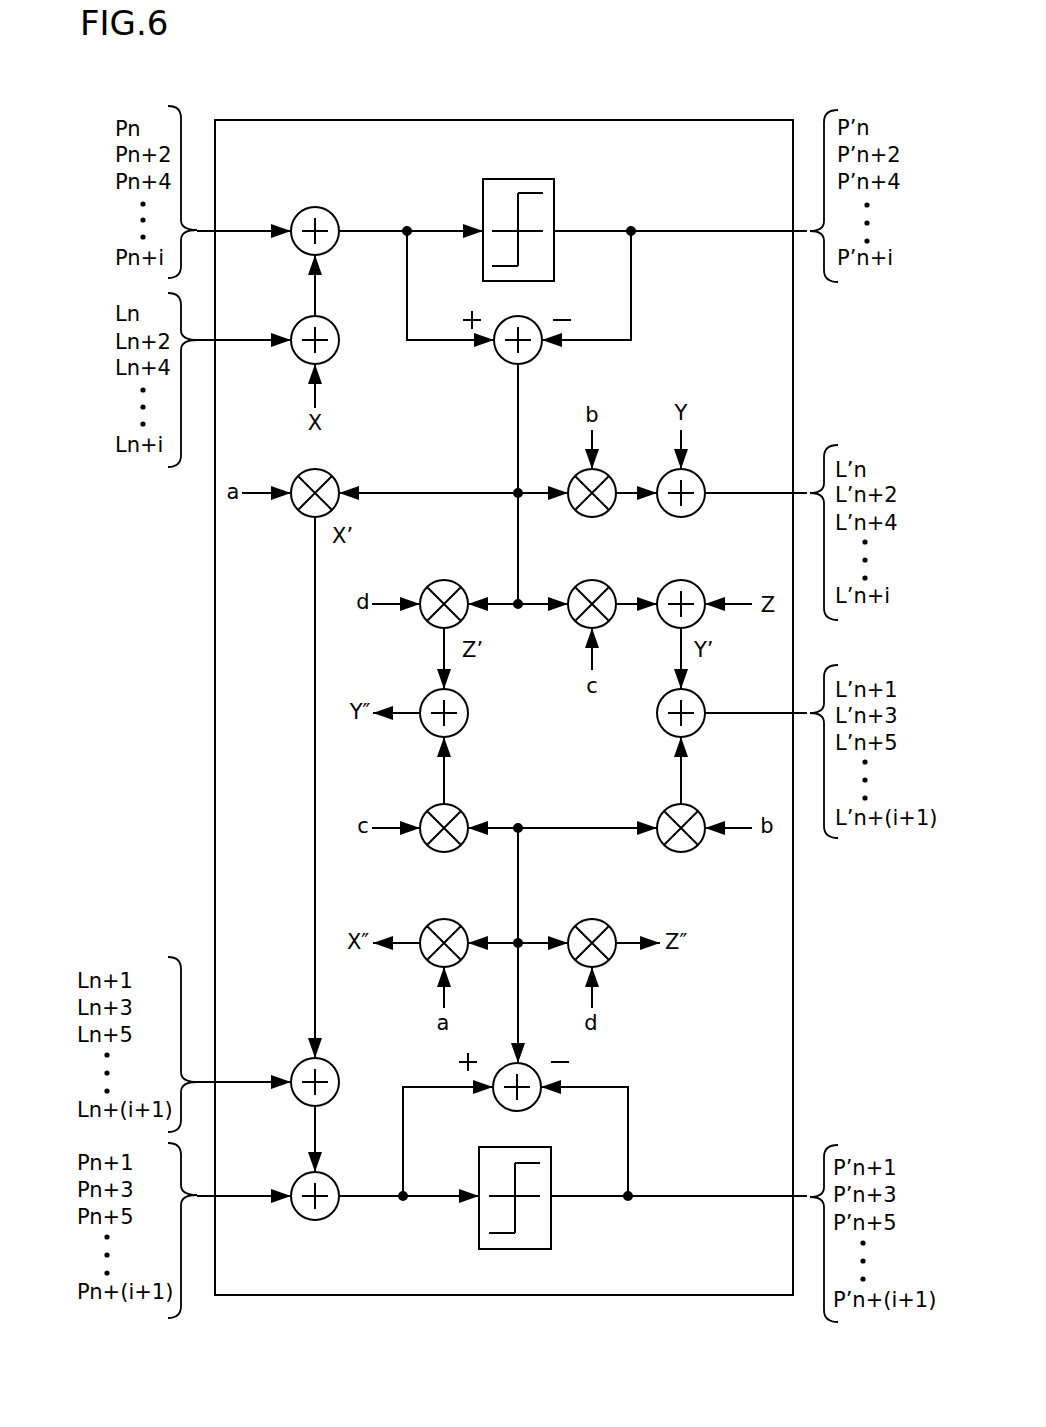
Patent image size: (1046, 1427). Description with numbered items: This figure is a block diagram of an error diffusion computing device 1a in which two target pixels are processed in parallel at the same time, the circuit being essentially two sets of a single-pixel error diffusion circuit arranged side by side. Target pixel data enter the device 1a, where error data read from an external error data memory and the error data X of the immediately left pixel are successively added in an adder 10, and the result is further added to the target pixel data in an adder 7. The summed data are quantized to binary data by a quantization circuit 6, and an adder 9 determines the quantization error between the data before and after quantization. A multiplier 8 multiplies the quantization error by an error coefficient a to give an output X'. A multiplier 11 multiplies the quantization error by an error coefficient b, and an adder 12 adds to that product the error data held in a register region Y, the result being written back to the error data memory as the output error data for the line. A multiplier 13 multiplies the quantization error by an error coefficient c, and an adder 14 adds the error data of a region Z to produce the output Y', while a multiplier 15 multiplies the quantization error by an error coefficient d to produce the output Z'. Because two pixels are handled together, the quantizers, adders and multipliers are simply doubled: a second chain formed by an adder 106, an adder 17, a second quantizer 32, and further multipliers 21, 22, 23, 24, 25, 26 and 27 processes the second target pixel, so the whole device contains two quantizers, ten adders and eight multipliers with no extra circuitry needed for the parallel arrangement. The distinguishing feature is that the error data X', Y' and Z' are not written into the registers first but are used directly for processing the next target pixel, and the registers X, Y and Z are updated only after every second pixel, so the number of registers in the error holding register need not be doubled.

The error diffusion computing device 1a is at (670, 121).
The adder 7 is at (338, 211).
The adder 10 is at (334, 322).
The quantization circuit 6 is at (554, 215).
The adder 9 is at (537, 360).
The multiplier 8 is at (334, 470).
The multiplier 21 is at (610, 475).
The multiplier 11 is at (700, 475).
The multiplier 22 is at (610, 586).
The adder 12 is at (700, 586).
The multiplier 23 is at (462, 586).
The multiplier 13 is at (461, 695).
The adder 14 is at (698, 695).
The multiplier 25 is at (461, 811).
The multiplier 24 is at (698, 811).
The multiplier 27 is at (459, 925).
The multiplier 26 is at (607, 925).
The adder 106 is at (333, 1064).
The multiplier 15 is at (535, 1066).
The adder 17 is at (332, 1178).
The quantizer 32 is at (551, 1222).